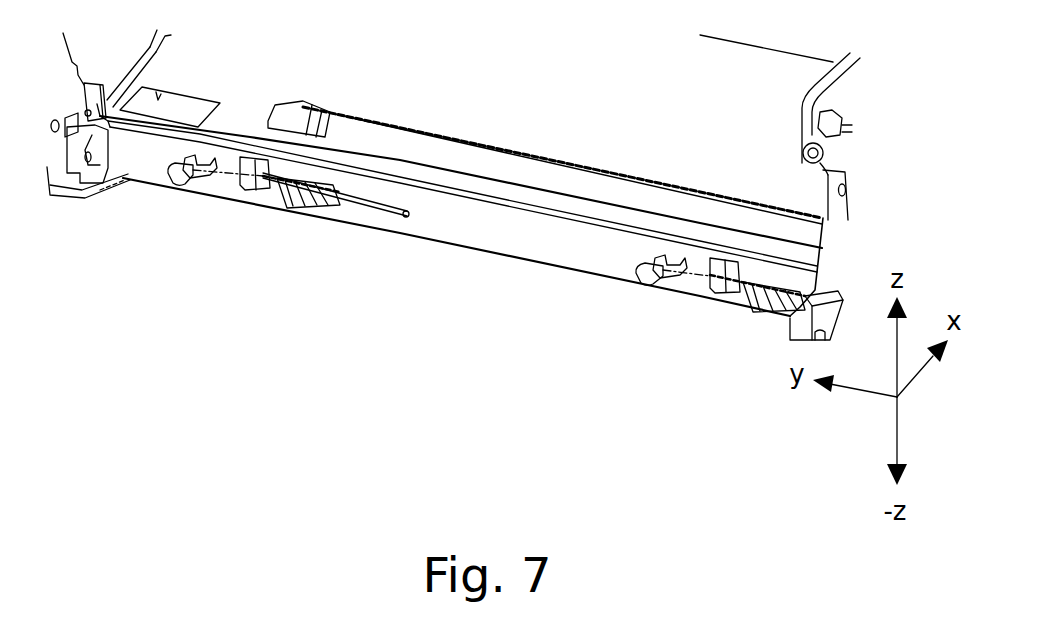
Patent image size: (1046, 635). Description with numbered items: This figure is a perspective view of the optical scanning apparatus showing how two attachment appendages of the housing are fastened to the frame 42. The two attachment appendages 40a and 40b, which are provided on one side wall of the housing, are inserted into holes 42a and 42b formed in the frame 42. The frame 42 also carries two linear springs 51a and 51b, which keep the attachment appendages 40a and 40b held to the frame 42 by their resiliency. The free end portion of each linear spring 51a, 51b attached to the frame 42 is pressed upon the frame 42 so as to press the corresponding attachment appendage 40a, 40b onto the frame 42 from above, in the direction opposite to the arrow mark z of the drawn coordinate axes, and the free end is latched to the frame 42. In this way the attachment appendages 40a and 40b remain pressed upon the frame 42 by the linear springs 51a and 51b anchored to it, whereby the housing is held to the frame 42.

The frame 42 is at (458, 226).
The hole 42a is at (773, 237).
The hole 42b is at (318, 162).
The attachment appendage 40a is at (743, 307).
The attachment appendage 40b is at (277, 207).
The linear spring 51a is at (700, 272).
The linear spring 51b is at (357, 200).